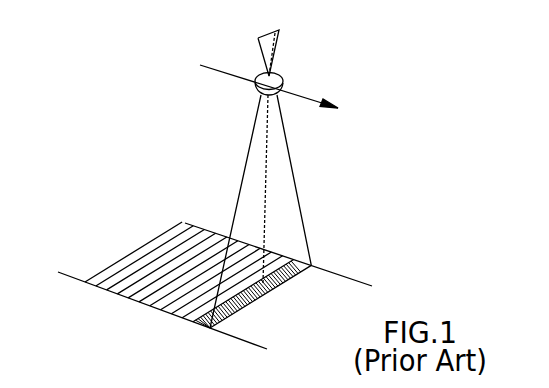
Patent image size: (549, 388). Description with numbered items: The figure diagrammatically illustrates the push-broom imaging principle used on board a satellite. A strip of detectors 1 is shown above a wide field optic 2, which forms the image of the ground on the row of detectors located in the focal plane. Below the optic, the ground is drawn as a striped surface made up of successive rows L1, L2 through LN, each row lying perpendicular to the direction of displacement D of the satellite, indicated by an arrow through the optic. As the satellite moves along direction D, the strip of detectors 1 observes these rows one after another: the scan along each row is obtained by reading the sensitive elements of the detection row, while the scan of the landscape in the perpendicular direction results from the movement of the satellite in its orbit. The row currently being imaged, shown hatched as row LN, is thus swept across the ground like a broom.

The strip of detectors 1 is at (279, 30).
The wide field optic 2 is at (281, 78).
The direction of displacement D is at (311, 100).
The first row L1 is at (84, 282).
The second row L2 is at (96, 287).
The N-th row LN is at (196, 325).